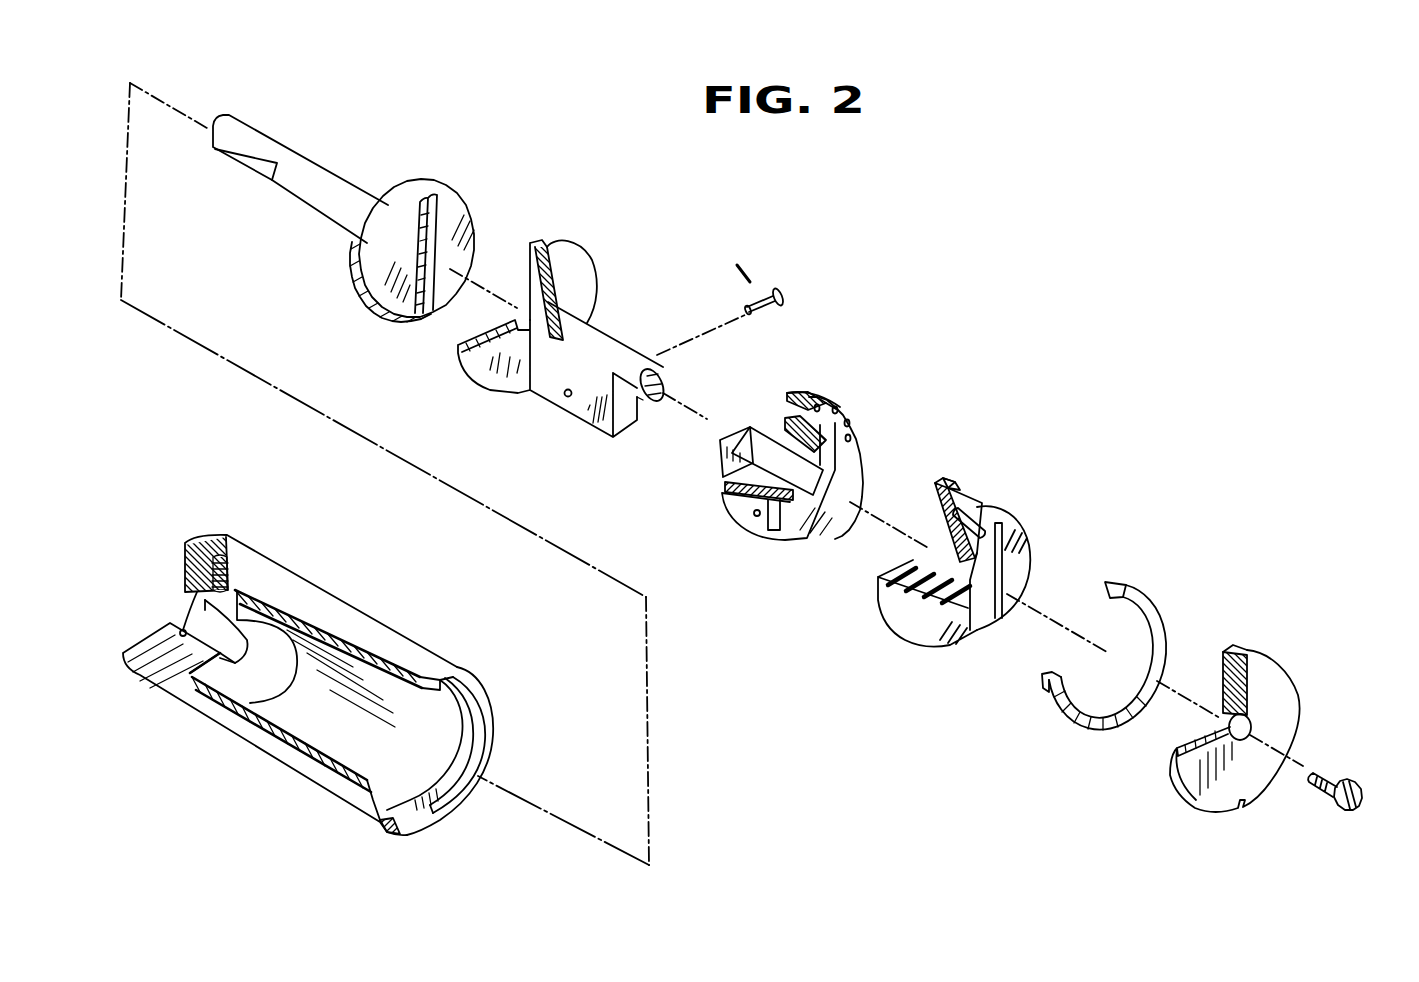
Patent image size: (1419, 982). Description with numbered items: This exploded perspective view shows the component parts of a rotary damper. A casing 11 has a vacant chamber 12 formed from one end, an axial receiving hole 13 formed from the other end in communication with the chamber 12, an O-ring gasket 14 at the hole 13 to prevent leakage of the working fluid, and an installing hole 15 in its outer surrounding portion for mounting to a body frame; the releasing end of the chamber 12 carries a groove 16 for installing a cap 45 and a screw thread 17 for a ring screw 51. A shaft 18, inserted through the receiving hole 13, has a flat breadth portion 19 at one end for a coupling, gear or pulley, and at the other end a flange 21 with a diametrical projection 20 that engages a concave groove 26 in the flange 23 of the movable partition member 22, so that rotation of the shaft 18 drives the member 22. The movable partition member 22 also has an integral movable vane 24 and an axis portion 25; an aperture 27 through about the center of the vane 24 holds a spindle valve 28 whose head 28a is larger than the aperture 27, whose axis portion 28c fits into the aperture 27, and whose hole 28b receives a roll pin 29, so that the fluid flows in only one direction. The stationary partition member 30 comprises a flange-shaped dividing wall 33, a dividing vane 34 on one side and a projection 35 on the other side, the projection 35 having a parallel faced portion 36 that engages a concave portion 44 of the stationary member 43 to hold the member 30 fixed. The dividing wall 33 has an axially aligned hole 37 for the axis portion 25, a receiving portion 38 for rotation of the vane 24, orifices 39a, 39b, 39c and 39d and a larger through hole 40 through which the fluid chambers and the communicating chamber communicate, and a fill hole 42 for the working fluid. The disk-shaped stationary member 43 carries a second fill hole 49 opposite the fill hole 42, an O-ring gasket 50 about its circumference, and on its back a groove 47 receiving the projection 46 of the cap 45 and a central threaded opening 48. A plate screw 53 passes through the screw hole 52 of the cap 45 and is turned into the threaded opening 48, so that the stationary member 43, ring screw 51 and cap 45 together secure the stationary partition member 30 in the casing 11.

The casing 11 is at (253, 750).
The vacant chamber 12 is at (433, 721).
The axial receiving hole 13 is at (243, 640).
The O-ring gasket 14 is at (197, 603).
The installing hole 15 is at (222, 558).
The groove 16 is at (430, 672).
The screw thread 17 is at (472, 757).
The shaft 18 is at (333, 174).
The flat breadth portion 19 is at (238, 150).
The diametrical projection 20 is at (440, 220).
The flange 21 is at (427, 183).
The movable partition member 22 is at (612, 347).
The flange 23 is at (565, 244).
The movable vane 24 is at (590, 418).
The axis portion 25 is at (663, 382).
The concave groove 26 is at (533, 262).
The aperture 27 is at (565, 397).
The spindle valve 28 is at (762, 276).
The head 28a is at (787, 297).
The hole 28b is at (743, 299).
The axis portion 28c is at (763, 290).
The roll pin 29 is at (743, 263).
The stationary partition member 30 is at (733, 510).
The dividing wall 33 is at (810, 392).
The dividing vane 34 is at (723, 467).
The projection 35 is at (807, 532).
The parallel faced portion 36 is at (775, 531).
The axially aligned hole 37 is at (833, 475).
The receiving portion 38 is at (750, 440).
The orifice 39a is at (820, 405).
The orifice 39b is at (838, 408).
The orifice 39c is at (850, 421).
The orifice 39d is at (852, 438).
The through hole 40 is at (755, 516).
The fill hole 42 is at (783, 418).
The stationary member 43 is at (916, 638).
The concave portion 44 is at (940, 513).
The projection 46 is at (1223, 673).
The groove 47 is at (983, 613).
The threaded opening 48 is at (1005, 577).
The second fill hole 49 is at (963, 502).
The O-ring gasket 50 is at (962, 490).
The ring screw 51 is at (1155, 606).
The cap 45 is at (1301, 723).
The screw hole 52 is at (1247, 722).
The plate screw 53 is at (1333, 780).